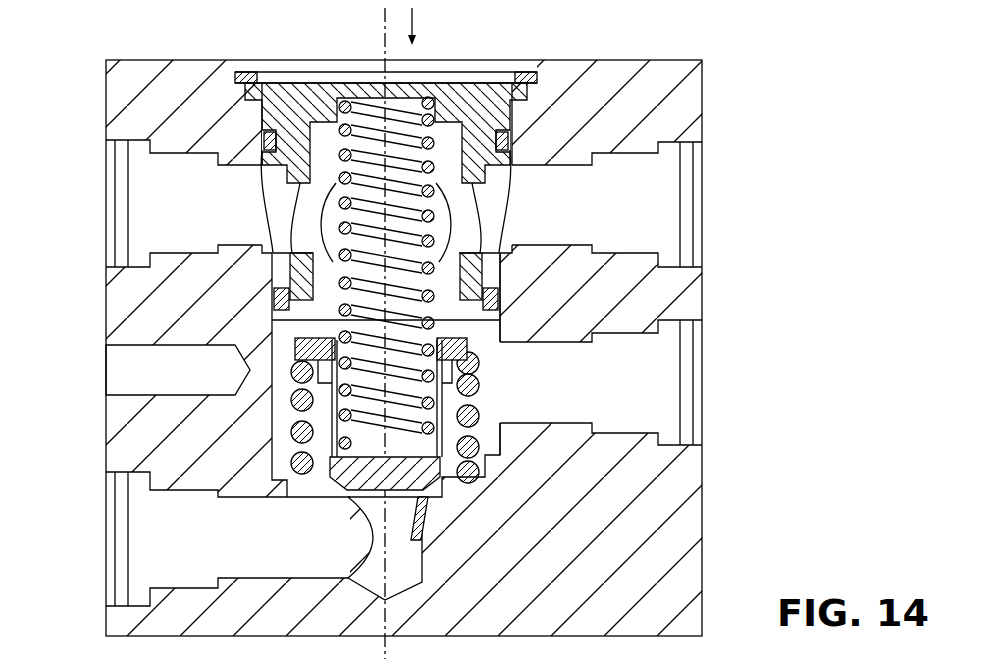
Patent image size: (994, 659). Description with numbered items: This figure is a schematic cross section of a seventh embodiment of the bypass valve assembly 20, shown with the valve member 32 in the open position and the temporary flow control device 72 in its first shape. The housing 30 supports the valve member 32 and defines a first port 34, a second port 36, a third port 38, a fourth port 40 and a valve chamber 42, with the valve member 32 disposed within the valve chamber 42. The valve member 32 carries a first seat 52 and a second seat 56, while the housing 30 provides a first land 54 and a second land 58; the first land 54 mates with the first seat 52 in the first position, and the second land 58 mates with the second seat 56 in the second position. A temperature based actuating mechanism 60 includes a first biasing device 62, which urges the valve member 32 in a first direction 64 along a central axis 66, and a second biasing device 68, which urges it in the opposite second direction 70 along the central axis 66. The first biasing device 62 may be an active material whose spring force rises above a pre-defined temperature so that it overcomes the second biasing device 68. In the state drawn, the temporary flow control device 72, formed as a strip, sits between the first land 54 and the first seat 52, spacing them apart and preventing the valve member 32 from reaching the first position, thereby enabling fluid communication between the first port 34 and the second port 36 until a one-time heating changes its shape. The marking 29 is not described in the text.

The bypass valve assembly 20 is at (674, 55).
The housing 30 is at (688, 97).
The third port 38 is at (118, 150).
The fourth port 40 is at (690, 138).
The first port 34 is at (675, 322).
The second port 36 is at (120, 598).
The valve chamber 42 is at (500, 335).
The second land 58 is at (316, 293).
The second seat 56 is at (300, 345).
The first biasing device 62 is at (290, 400).
The first seat 52 is at (330, 480).
The first land 54 is at (345, 497).
The temperature based actuating mechanism 60 is at (446, 268).
The first direction 64 is at (355, 14).
The second direction 70 is at (418, 20).
The second biasing device 68 is at (445, 150).
The temporary flow control device 72 is at (412, 522).
The central axis 66 is at (388, 632).
The valve member 32 is at (482, 410).
The sheet marker 29 is at (746, 655).